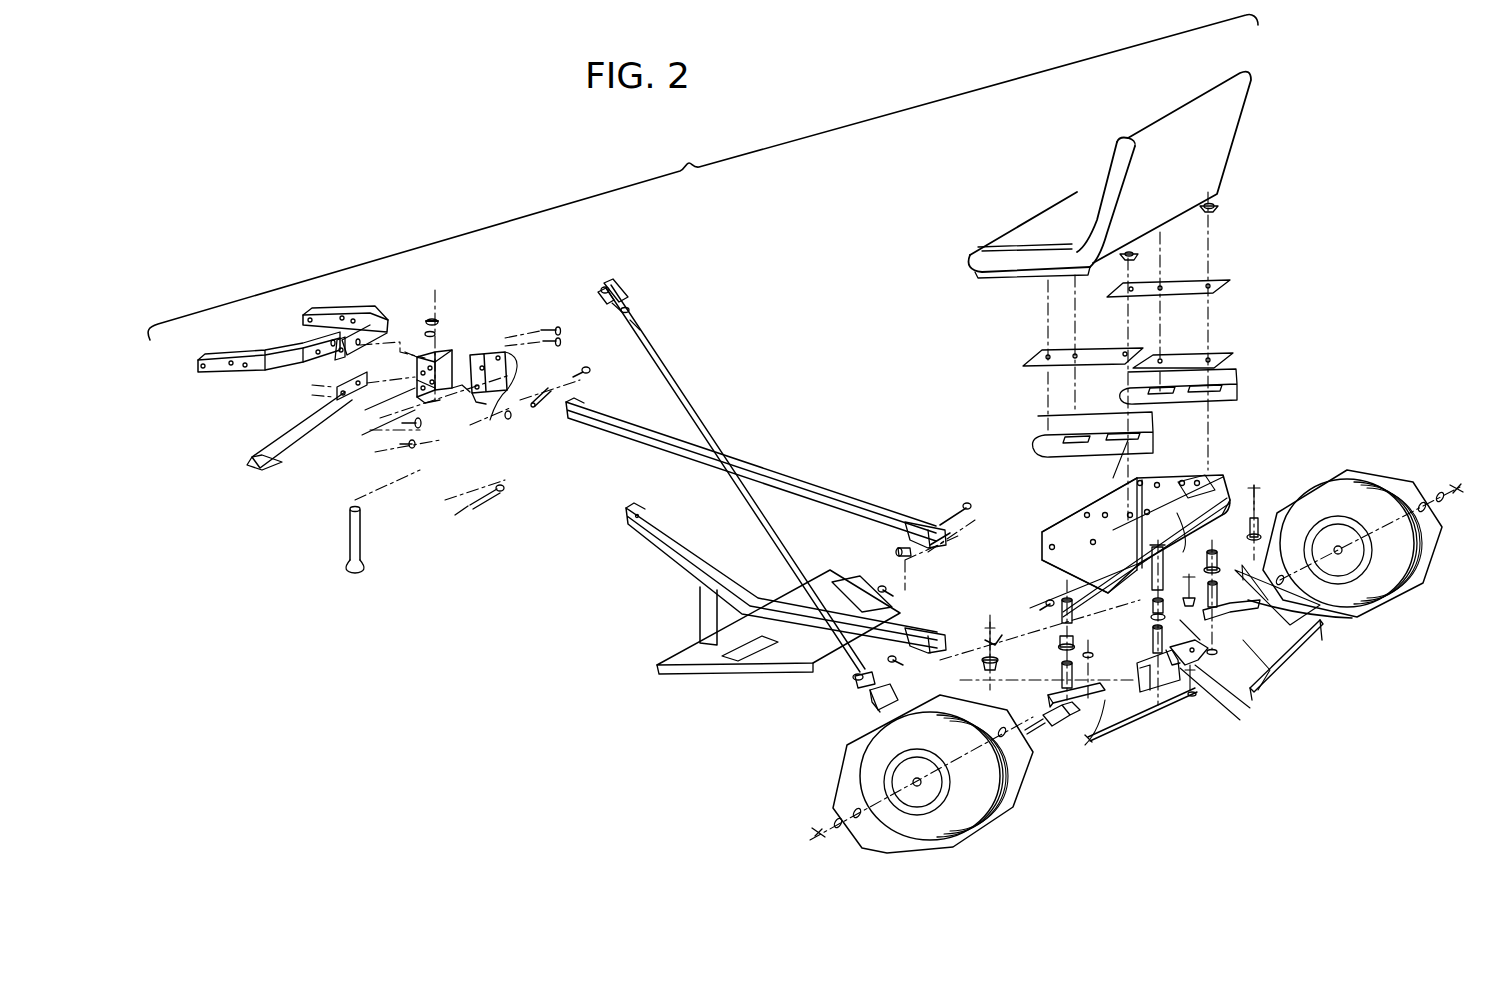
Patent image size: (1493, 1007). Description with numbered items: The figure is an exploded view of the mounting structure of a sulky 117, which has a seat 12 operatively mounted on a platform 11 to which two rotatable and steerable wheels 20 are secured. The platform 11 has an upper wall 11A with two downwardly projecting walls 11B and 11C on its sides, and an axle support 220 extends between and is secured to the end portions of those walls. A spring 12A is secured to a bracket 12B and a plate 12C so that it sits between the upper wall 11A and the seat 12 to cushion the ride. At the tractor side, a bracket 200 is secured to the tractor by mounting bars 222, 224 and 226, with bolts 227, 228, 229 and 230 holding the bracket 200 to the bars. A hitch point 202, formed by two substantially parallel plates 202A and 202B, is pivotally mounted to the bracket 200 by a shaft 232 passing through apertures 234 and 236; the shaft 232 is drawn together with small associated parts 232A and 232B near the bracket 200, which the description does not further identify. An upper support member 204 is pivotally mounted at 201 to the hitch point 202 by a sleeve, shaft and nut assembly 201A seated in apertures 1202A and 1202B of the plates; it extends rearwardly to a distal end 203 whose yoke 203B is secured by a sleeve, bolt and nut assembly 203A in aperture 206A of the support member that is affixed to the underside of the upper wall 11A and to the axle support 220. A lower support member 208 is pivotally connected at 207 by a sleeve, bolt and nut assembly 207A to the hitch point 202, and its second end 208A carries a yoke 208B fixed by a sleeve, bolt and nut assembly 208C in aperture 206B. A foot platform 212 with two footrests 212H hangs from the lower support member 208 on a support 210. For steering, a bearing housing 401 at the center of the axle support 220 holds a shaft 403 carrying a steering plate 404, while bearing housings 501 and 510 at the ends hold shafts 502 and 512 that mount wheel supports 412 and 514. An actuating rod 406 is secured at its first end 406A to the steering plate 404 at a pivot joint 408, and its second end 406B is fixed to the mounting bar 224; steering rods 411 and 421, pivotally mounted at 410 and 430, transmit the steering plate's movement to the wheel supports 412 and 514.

The seat 12 is at (1220, 158).
The bracket 12B is at (1218, 208).
The plate 12C is at (1228, 281).
The spring 12A is at (1236, 350).
The platform 11 is at (1214, 500).
The upper wall 11A is at (1194, 480).
The downwardly projecting wall 11B is at (1102, 580).
The downwardly projecting wall 11C is at (1240, 464).
The axle support 220 is at (1187, 492).
The bearing housing 401 is at (1087, 515).
The aperture 206A is at (1117, 537).
The aperture 206B is at (1151, 633).
The upper support member 204 is at (716, 456).
The actuating rod 406 is at (694, 412).
The second end of actuating rod 406B is at (616, 285).
The first end of actuating rod 406A is at (864, 702).
The bolt 229 is at (630, 308).
The bolt 230 is at (588, 342).
The pivot 201 is at (578, 409).
The sleeve, shaft and nut assembly 201A is at (586, 376).
The distal end 203 is at (936, 524).
The sleeve, bolt and nut assembly 203A is at (965, 502).
The yoke 203B is at (908, 522).
The lower support member 208 is at (673, 550).
The second end of lower support member 208A is at (887, 590).
The yoke 208B is at (930, 630).
The sleeve, bolt and nut assembly 208C is at (982, 606).
The bearing housing 501 is at (1067, 612).
The support 210 is at (699, 610).
The platform 212 is at (668, 674).
The footrest 212H is at (748, 656).
The bracket 200 is at (436, 350).
The hitch point 202 is at (478, 328).
The aperture 1202A is at (500, 352).
The aperture 1202B is at (507, 390).
The parallel plate 202B is at (504, 386).
The aperture 236 is at (430, 330).
The nut 232A is at (432, 318).
The axis 232B is at (416, 346).
The aperture 234 is at (424, 404).
The pivot 207 is at (507, 404).
The parallel plate 202A is at (556, 424).
The sleeve, bolt and nut assembly 207A is at (498, 492).
The bolt 227 is at (414, 430).
The bolt 228 is at (410, 448).
The mounting bar 224 is at (304, 320).
The mounting bar 222 is at (216, 368).
The mounting bar 226 is at (280, 440).
The shaft 232 is at (349, 542).
The bearing housing 510 is at (1337, 470).
The wheel 20 is at (1387, 543).
The shaft 512 is at (1352, 618).
The wheel support 514 is at (1290, 640).
The steering rod 421 is at (1268, 680).
The pivot 430 is at (1266, 668).
The pivot 410 is at (1255, 690).
The steering plate 404 is at (1208, 652).
The shaft 403 is at (1088, 684).
The pivot joint 408 is at (1160, 712).
The steering rod 411 is at (1102, 744).
The wheel support 412 is at (1050, 723).
The shaft 502 is at (1062, 686).
The sulky 117 is at (1342, 272).